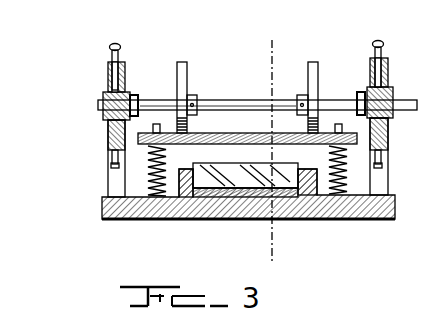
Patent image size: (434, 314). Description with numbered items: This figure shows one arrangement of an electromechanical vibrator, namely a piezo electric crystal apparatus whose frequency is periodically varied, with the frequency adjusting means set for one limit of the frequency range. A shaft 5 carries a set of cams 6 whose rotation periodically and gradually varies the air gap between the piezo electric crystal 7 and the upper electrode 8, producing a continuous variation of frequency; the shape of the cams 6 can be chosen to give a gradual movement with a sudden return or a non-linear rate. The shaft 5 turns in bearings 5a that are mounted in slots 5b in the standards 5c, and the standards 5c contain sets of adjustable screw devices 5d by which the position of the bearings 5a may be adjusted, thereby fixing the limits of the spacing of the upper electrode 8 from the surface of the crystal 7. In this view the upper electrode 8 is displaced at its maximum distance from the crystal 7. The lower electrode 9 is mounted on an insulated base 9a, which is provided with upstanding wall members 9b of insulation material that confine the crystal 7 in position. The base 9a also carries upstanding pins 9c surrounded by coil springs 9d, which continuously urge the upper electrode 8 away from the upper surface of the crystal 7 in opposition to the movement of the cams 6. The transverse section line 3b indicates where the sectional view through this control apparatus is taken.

The shaft 5 is at (220, 108).
The bearings 5a is at (127, 97).
The slots 5b is at (107, 88).
The standards 5c is at (110, 70).
The adjustable screw devices 5d is at (119, 47).
The set of cams 6 is at (182, 78).
The piezo electric crystal 7 is at (214, 164).
The upper electrode 8 is at (226, 135).
The lower electrode 9 is at (248, 177).
The insulated base 9a is at (195, 219).
The upstanding wall members 9b is at (308, 217).
The upstanding pins 9c is at (156, 124).
The coil springs 9d is at (147, 182).
The section line 3b is at (293, 49).